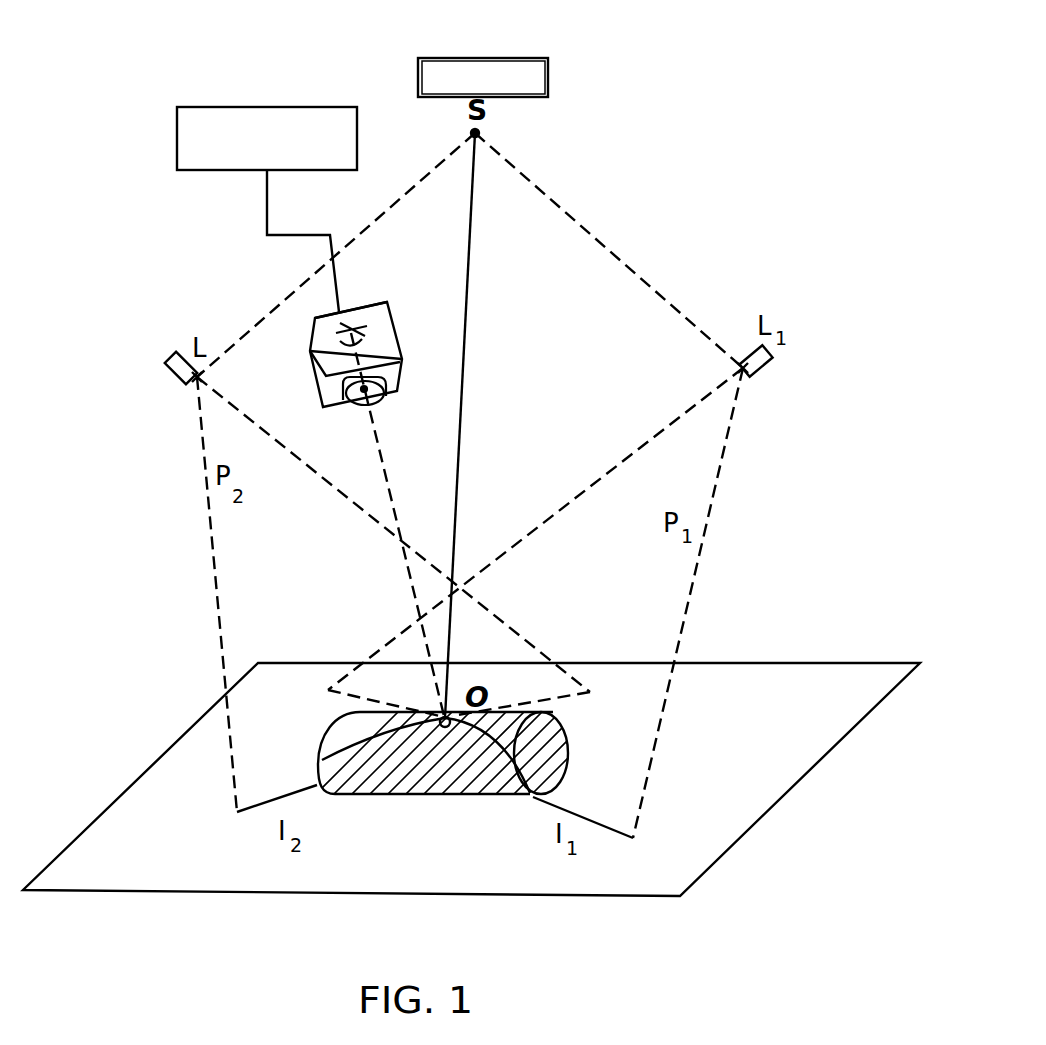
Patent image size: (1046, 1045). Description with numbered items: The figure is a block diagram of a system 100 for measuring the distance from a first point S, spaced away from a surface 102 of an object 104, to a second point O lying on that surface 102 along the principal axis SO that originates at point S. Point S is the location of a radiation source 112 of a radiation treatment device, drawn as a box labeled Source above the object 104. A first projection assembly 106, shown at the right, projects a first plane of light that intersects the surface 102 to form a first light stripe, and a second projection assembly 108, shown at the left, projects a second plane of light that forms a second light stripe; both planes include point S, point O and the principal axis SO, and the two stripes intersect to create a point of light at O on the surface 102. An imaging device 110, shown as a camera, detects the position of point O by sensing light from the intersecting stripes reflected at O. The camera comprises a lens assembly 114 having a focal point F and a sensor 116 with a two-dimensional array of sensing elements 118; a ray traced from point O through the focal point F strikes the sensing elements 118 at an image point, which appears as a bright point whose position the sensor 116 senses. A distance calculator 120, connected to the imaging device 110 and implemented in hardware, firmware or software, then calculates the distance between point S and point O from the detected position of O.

The system 100 is at (678, 127).
The surface 102 is at (415, 793).
The object 104 is at (563, 758).
The first projection assembly 106 is at (773, 360).
The second projection assembly 108 is at (175, 377).
The imaging device 110 is at (390, 310).
The radiation source 112 is at (497, 55).
The lens assembly 114 is at (397, 375).
The sensor 116 is at (347, 305).
The sensing elements 118 is at (377, 295).
The distance calculator 120 is at (228, 107).